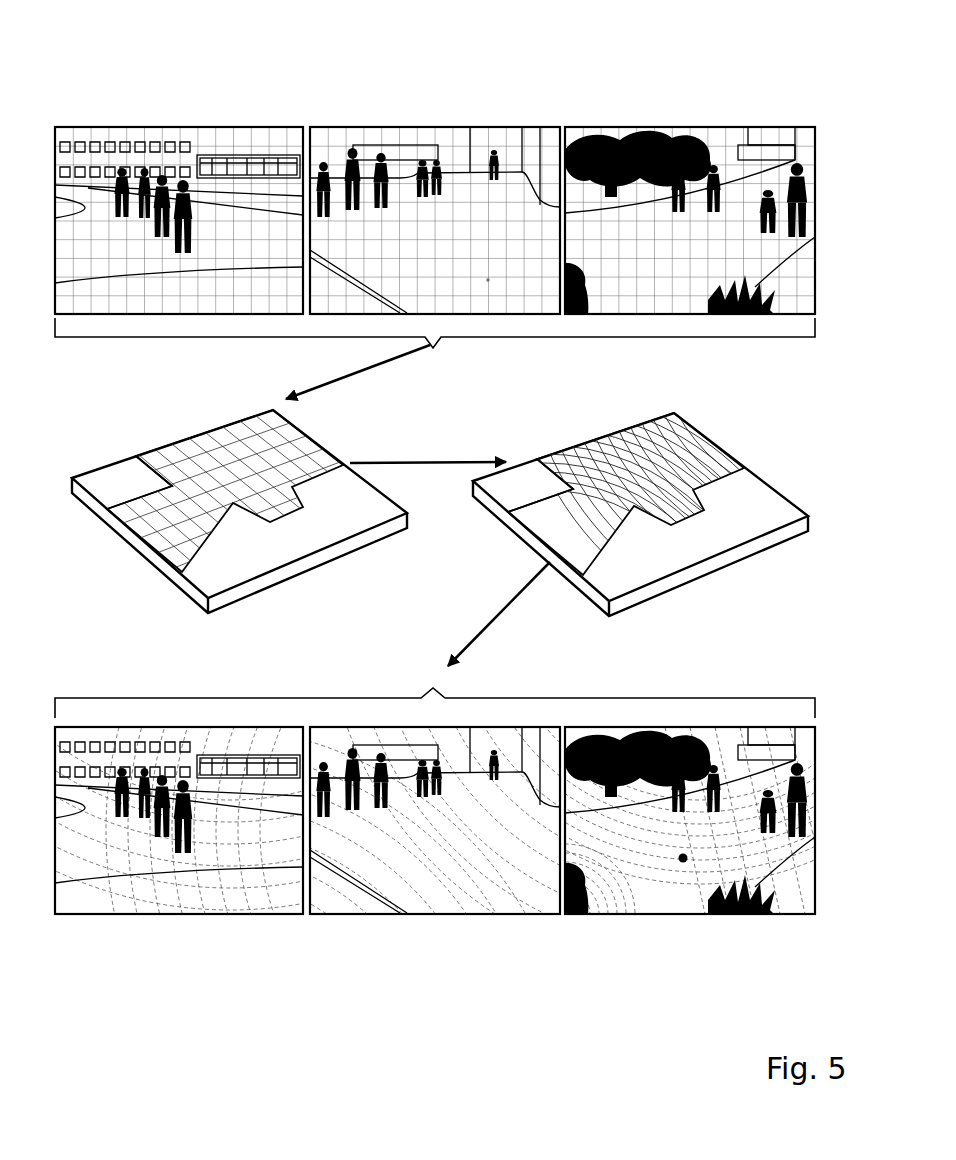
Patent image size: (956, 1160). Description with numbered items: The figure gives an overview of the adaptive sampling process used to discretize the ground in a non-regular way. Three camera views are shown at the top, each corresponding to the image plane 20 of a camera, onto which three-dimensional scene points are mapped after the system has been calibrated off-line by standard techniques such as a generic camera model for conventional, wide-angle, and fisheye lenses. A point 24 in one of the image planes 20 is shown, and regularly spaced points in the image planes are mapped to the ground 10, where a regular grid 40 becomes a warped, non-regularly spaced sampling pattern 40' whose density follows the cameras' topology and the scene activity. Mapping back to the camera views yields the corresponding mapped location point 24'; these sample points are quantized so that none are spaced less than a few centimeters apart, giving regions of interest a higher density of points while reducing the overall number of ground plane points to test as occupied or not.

The display device 10 is at (673, 437).
The image plane 20 is at (625, 910).
The image point 24 is at (506, 343).
The mapped image point 24' is at (663, 924).
The grid pattern 40 is at (227, 511).
The warped grid pattern 40' is at (606, 485).